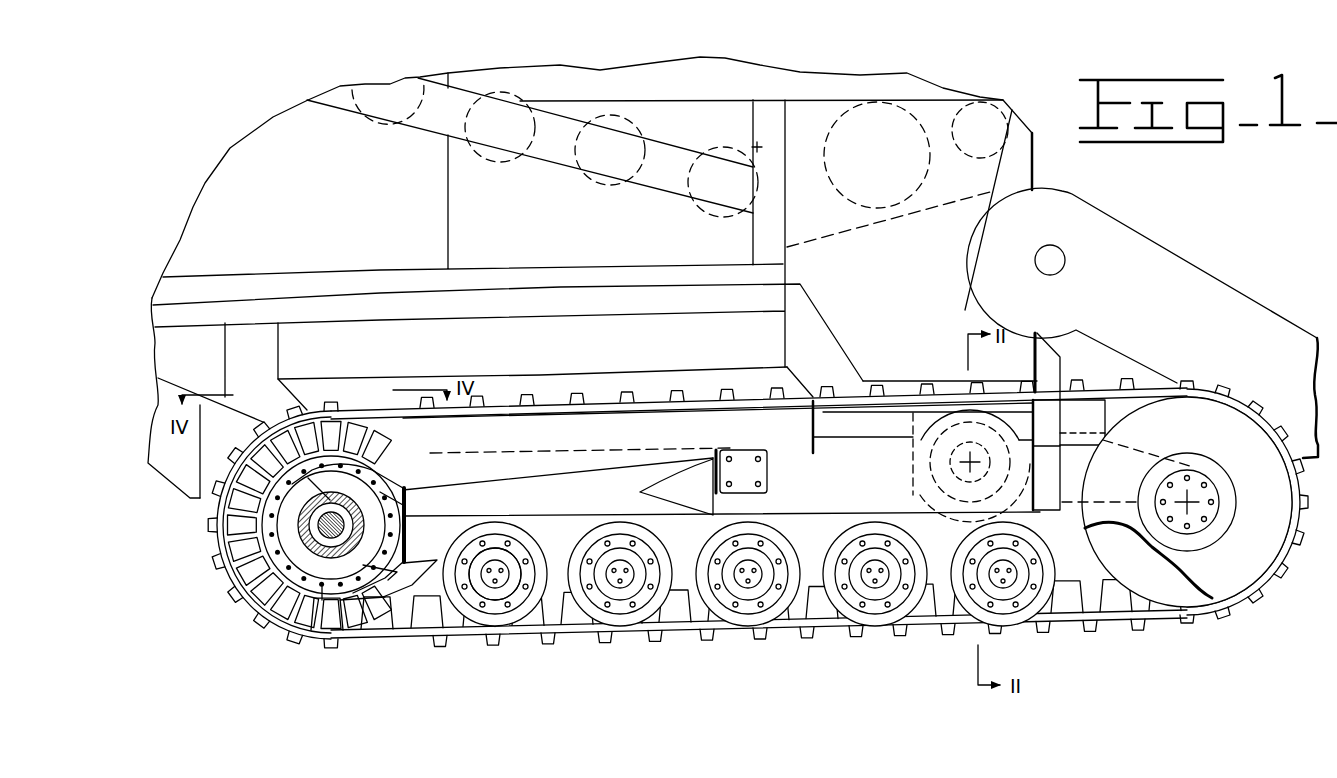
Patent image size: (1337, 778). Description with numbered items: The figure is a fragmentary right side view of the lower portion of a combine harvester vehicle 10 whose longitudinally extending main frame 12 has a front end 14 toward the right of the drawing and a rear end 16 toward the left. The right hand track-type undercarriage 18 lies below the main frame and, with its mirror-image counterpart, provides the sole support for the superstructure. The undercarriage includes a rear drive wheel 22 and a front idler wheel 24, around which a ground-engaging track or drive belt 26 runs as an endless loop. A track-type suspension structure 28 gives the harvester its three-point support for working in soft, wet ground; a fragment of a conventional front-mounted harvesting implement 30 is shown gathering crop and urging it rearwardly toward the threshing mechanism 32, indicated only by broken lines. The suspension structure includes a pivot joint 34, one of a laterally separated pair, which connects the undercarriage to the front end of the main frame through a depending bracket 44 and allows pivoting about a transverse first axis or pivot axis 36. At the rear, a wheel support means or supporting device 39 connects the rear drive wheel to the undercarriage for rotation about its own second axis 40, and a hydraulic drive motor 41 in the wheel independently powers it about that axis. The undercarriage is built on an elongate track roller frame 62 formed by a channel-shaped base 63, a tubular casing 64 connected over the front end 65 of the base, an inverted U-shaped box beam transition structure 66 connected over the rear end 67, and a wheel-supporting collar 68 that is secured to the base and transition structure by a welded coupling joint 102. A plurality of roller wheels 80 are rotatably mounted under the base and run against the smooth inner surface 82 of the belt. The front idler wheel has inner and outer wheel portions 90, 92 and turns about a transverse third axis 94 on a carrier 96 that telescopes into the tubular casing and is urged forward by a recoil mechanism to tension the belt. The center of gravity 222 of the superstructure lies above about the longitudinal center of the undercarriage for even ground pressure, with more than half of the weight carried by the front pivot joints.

The combine harvester vehicle 10 is at (287, 128).
The main frame 12 is at (1044, 351).
The front end 14 is at (1038, 386).
The rear end 16 is at (347, 390).
The right hand track-type undercarriage 18 is at (555, 376).
The rear drive wheel 22 is at (412, 466).
The front idler wheel 24 is at (1230, 422).
The ground-engaging track or drive belt 26 is at (497, 400).
The track-type suspension structure 28 is at (1048, 427).
The front-mounted harvesting implement 30 is at (1203, 268).
The threshing mechanism 32 is at (700, 211).
The pivot joint 34 is at (945, 463).
The first axis or pivot axis 36 is at (955, 470).
The wheel support means or supporting device 39 is at (410, 504).
The second axis 40 is at (323, 518).
The hydraulic drive motor 41 is at (316, 565).
The depending bracket 44 is at (917, 410).
The track roller frame 62 is at (582, 467).
The channel-shaped base 63 is at (733, 574).
The tubular casing 64 is at (757, 471).
The front end of the base 65 is at (950, 533).
The box beam transition structure 66 is at (721, 459).
The rear end of the base 67 is at (542, 549).
The wheel-supporting collar 68 is at (352, 586).
The roller wheels 80 is at (510, 606).
The smooth inner surface 82 is at (792, 612).
The inner wheel portion 90 is at (1148, 560).
The outer wheel portion 92 is at (1168, 502).
The third axis 94 is at (1195, 512).
The carrier 96 is at (1078, 462).
The welded coupling joint 102 is at (405, 539).
The center of gravity 222 is at (758, 143).